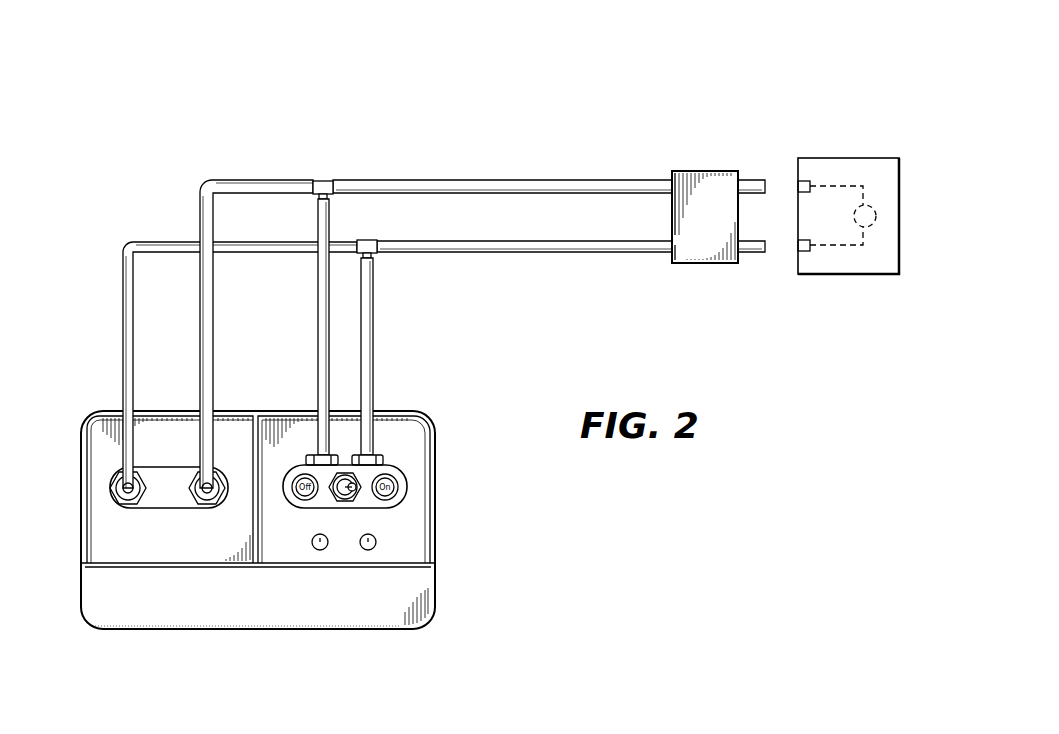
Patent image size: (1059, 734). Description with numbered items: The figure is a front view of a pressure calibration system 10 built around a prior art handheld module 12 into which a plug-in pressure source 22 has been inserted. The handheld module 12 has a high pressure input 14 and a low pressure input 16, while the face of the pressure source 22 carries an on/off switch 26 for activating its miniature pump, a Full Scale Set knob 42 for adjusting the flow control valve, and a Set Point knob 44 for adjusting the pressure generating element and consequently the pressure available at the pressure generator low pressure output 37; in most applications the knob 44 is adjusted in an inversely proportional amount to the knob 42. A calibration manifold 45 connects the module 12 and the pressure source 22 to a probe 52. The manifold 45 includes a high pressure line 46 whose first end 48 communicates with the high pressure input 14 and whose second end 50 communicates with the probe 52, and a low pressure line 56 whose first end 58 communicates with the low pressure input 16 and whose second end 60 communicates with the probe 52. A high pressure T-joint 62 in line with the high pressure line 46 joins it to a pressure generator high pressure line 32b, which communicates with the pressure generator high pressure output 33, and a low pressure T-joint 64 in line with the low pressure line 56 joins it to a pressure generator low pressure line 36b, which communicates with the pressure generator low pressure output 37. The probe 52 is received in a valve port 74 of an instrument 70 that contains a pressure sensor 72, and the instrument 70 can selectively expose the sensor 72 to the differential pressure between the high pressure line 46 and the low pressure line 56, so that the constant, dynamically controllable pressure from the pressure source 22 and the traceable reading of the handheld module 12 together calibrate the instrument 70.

The pressure calibration system 10 is at (220, 95).
The handheld module 12 is at (462, 557).
The high pressure input 14 is at (200, 524).
The low pressure input 16 is at (94, 505).
The pressure source 22 is at (428, 451).
The on/off switch 26 is at (356, 497).
The pressure generator high pressure line 32b is at (318, 298).
The pressure generator high pressure output 33 is at (312, 455).
The pressure generator low pressure line 36b is at (375, 298).
The pressure generator low pressure output 37 is at (378, 455).
The Full Scale (FS) Set knob 42 is at (368, 550).
The Set Point knob 44 is at (320, 550).
The calibration manifold 45 is at (126, 206).
The high pressure line 46 is at (500, 178).
The first end of high pressure line 48 is at (202, 480).
The second end of high pressure line 50 is at (668, 180).
The probe 52 is at (702, 260).
The low pressure line 56 is at (512, 254).
The first end of low pressure line 58 is at (124, 488).
The second end of low pressure line 60 is at (668, 256).
The high pressure T-joint 62 is at (321, 181).
The low pressure T-joint 64 is at (369, 240).
The instrument 70 is at (848, 158).
The pressure sensor 72 is at (873, 226).
The valve port 74 is at (775, 124).